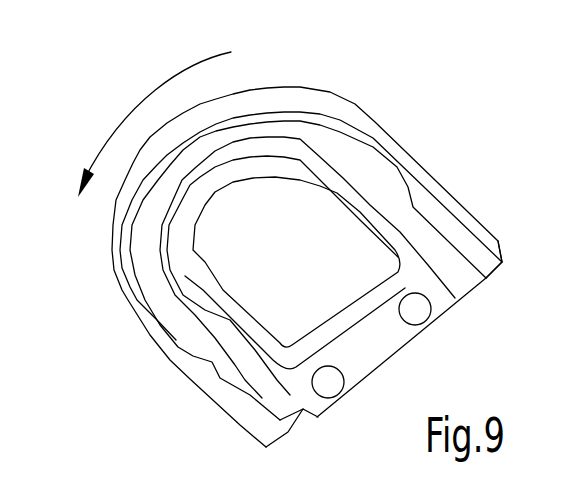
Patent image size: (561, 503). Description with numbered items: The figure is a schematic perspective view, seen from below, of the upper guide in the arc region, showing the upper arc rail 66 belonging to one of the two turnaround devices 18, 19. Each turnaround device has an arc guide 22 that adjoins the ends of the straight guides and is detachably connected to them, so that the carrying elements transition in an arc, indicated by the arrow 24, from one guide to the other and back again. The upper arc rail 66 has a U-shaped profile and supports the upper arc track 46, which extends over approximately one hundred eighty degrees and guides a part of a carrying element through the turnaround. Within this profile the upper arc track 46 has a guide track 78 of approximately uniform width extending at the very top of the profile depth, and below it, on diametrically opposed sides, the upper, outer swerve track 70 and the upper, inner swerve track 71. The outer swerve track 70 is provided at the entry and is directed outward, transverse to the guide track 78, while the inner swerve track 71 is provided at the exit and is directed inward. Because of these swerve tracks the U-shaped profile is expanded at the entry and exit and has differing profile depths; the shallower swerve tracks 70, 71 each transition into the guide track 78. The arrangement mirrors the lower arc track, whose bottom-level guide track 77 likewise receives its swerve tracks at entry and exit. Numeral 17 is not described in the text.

The turnaround device 18 is at (388, 110).
The turnaround device 19 is at (350, 410).
The arc guide 22 is at (120, 299).
The arrow 24 is at (147, 88).
The upper arc track 46 is at (170, 350).
The upper arc rail 66 is at (278, 127).
The upper outer swerve track 70 is at (377, 163).
The upper inner swerve track 71 is at (193, 305).
The guide track 77 is at (267, 502).
The guide track 78 is at (450, 263).
The housing 17 is at (159, 498).